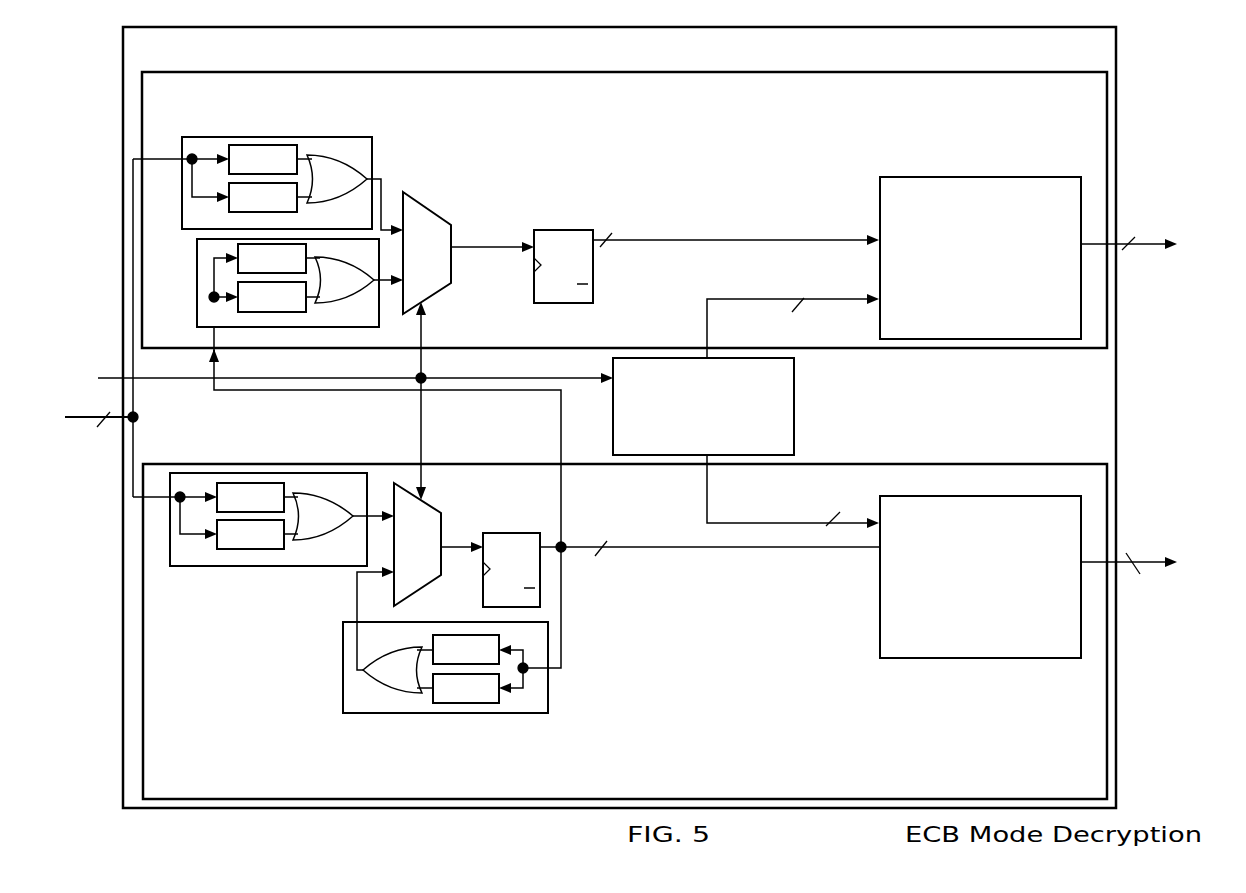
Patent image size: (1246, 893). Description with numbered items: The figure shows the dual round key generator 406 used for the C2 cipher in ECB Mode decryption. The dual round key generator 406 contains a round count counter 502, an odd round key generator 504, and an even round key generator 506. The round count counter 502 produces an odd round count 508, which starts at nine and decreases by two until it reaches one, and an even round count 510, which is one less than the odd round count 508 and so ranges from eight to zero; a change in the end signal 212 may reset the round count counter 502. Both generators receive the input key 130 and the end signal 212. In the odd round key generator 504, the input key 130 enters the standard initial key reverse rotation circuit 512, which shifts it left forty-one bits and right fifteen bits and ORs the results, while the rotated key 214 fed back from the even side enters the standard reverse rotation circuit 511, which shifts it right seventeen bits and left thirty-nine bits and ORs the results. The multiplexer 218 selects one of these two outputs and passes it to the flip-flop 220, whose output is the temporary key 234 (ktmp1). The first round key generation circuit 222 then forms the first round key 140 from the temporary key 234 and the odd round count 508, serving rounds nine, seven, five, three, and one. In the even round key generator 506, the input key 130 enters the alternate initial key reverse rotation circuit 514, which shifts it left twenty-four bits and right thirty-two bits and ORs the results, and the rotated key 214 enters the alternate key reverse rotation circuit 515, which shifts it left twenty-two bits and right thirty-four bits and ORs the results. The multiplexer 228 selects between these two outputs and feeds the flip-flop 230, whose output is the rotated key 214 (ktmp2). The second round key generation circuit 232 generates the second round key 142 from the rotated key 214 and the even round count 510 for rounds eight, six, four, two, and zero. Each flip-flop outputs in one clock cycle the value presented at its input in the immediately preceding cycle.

The dual round key generator 406 is at (468, 61).
The odd round key generator 504 is at (480, 106).
The even round key generator 506 is at (485, 789).
The input key 130 is at (133, 457).
The standard initial key reverse rotation circuit 512 is at (375, 143).
The standard reverse rotation circuit 511 is at (197, 255).
The multiplexer 218 is at (430, 208).
The flip-flop 220 is at (548, 229).
The temporary key 234 is at (680, 239).
The odd round count 508 is at (707, 315).
The first round key generation circuit 222 is at (1003, 264).
The first round key 140 is at (1140, 187).
The round count counter 502 is at (782, 417).
The end signal 212 is at (196, 390).
The alternate initial key reverse rotation circuit 514 is at (198, 567).
The multiplexer 228 is at (438, 503).
The flip-flop 230 is at (537, 532).
The rotated key 214 is at (672, 549).
The alternate key reverse rotation circuit 515 is at (548, 702).
The even round count 510 is at (707, 495).
The second round key generation circuit 232 is at (1005, 585).
The second round key 142 is at (1145, 623).